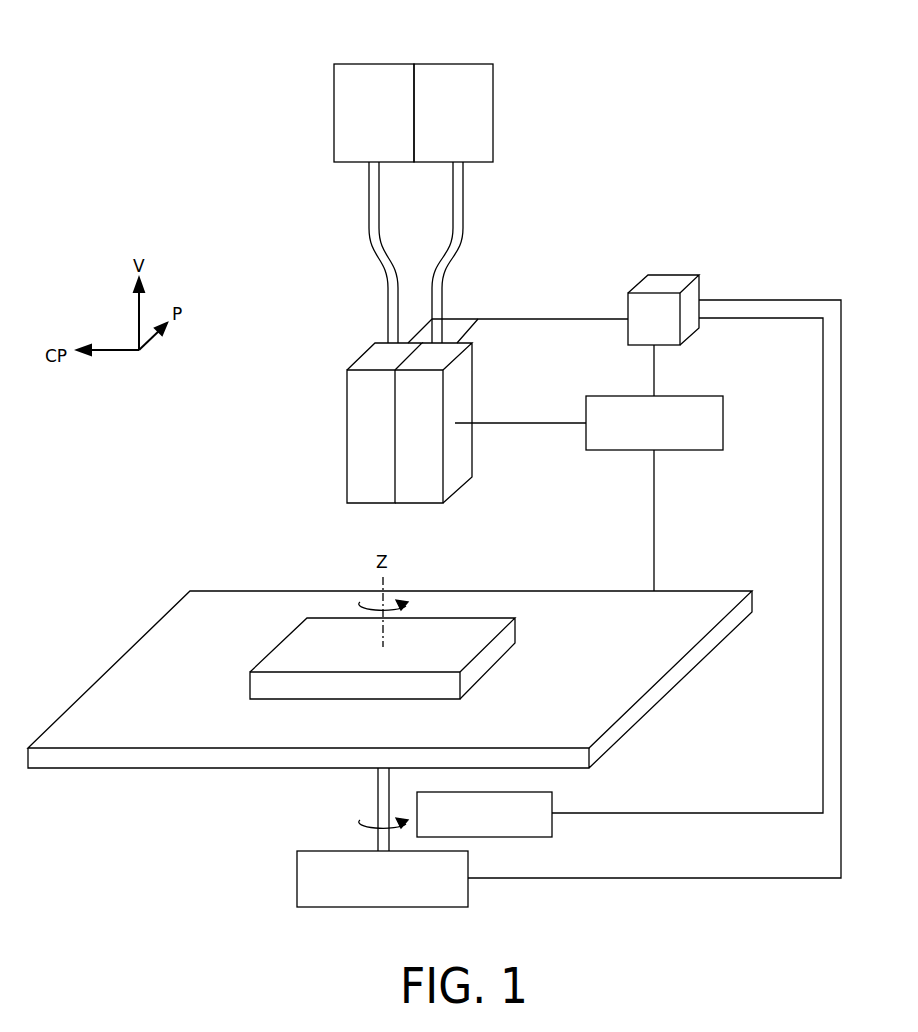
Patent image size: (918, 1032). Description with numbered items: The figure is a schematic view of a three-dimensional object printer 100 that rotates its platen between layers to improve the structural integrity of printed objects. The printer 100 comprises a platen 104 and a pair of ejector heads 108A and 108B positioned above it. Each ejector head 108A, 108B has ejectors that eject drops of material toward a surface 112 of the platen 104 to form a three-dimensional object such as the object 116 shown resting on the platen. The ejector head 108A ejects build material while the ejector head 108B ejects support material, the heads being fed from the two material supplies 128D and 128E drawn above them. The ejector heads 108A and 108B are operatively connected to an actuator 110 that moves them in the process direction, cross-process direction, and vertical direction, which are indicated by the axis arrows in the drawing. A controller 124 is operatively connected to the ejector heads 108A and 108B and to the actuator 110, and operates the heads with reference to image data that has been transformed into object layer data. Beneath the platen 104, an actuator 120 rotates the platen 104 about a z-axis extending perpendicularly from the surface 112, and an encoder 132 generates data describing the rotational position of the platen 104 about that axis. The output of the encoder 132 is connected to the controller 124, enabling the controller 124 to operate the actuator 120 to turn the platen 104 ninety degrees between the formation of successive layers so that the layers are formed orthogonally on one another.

The three-dimensional object printer 100 is at (667, 116).
The platen 104 is at (752, 600).
The ejector head 108A is at (347, 460).
The ejector head 108B is at (460, 460).
The actuator 110 is at (723, 423).
The surface of the platen 112 is at (158, 640).
The object 116 is at (278, 688).
The actuator 120 is at (297, 878).
The controller 124 is at (663, 282).
The material supply 128D is at (378, 64).
The material supply 128E is at (458, 64).
The encoder 132 is at (552, 825).